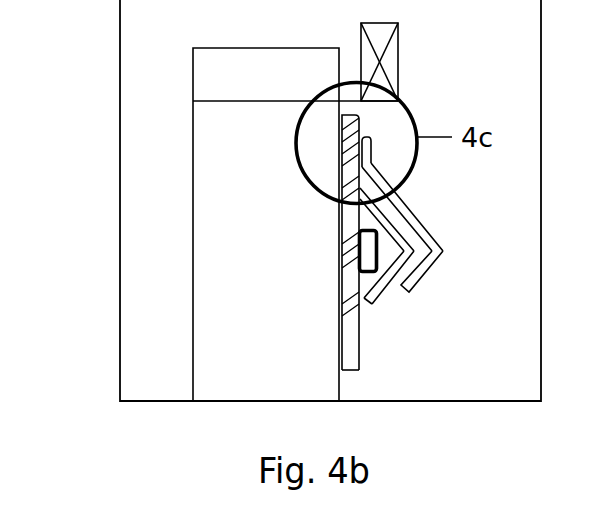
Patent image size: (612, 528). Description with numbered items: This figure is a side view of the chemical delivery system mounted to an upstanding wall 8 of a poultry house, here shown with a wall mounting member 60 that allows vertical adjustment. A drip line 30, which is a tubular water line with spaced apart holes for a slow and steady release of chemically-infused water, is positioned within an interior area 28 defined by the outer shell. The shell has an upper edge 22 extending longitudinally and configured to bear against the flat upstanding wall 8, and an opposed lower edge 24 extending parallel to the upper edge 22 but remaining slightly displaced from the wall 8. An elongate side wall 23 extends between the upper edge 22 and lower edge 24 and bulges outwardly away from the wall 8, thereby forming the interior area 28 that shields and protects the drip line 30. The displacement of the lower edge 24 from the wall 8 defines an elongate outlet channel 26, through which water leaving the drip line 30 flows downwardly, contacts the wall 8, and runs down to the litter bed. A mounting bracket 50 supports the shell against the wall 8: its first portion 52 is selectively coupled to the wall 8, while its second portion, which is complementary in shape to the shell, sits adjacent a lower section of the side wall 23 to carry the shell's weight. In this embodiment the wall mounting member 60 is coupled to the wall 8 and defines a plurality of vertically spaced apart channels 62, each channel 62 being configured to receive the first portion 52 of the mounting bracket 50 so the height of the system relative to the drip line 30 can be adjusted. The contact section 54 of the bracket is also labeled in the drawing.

The upstanding wall 8 is at (220, 251).
The upper edge 22 is at (355, 193).
The side wall 23 is at (392, 217).
The lower edge 24 is at (385, 292).
The outlet channel 26 is at (365, 304).
The interior area 28 is at (368, 217).
The drip line 30 is at (368, 248).
The mounting bracket 50 is at (442, 230).
The first portion 52 is at (367, 137).
The contact section 54 is at (430, 267).
The wall mounting member 60 is at (350, 361).
The channel 62 is at (343, 303).